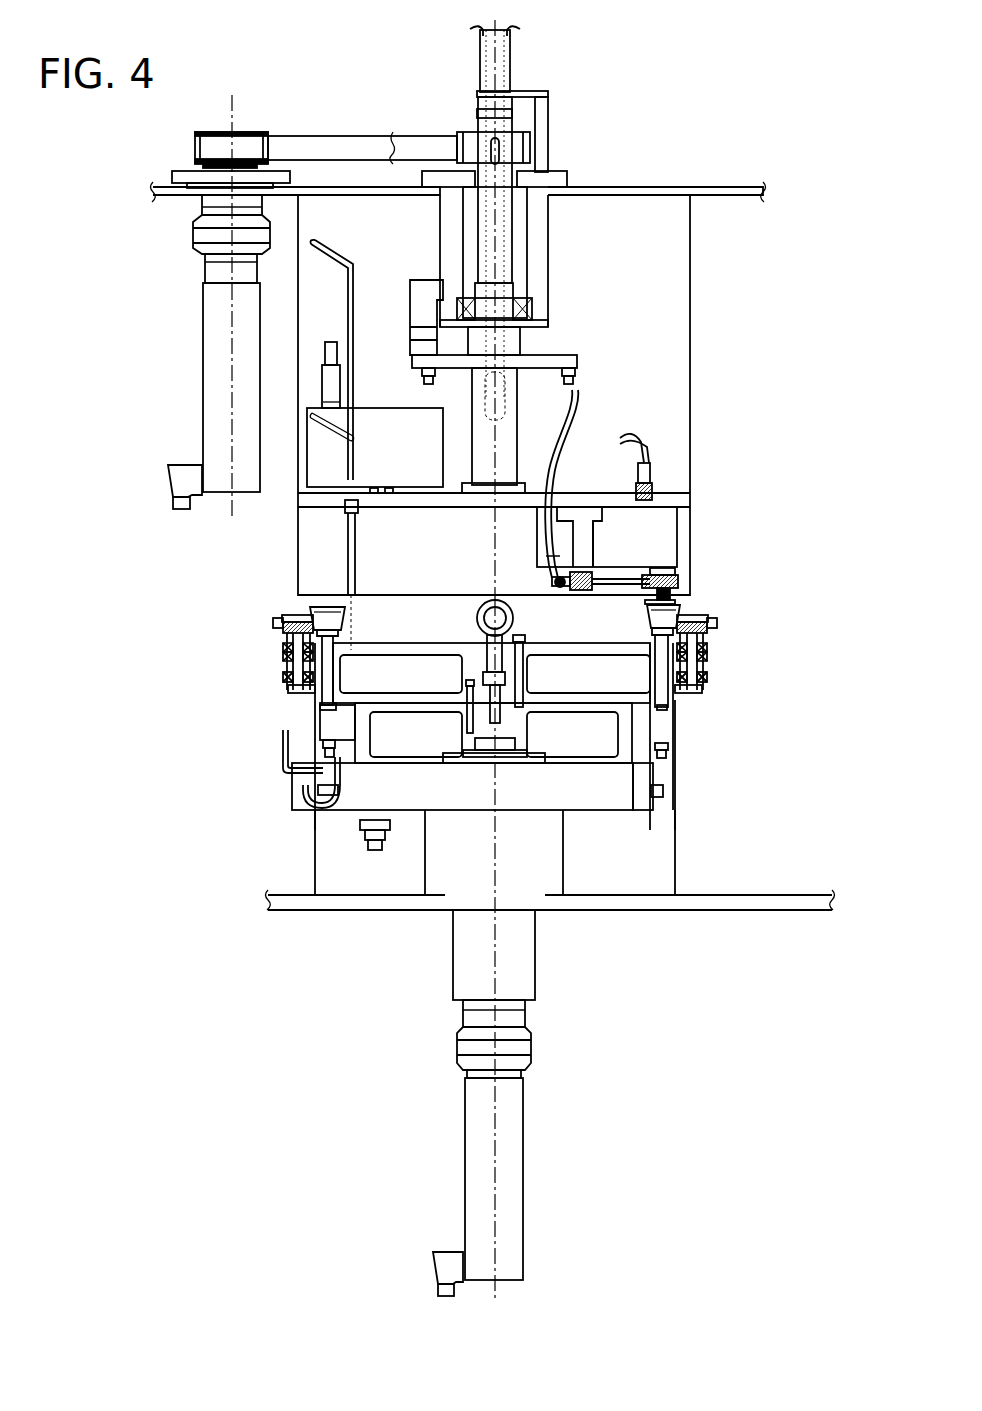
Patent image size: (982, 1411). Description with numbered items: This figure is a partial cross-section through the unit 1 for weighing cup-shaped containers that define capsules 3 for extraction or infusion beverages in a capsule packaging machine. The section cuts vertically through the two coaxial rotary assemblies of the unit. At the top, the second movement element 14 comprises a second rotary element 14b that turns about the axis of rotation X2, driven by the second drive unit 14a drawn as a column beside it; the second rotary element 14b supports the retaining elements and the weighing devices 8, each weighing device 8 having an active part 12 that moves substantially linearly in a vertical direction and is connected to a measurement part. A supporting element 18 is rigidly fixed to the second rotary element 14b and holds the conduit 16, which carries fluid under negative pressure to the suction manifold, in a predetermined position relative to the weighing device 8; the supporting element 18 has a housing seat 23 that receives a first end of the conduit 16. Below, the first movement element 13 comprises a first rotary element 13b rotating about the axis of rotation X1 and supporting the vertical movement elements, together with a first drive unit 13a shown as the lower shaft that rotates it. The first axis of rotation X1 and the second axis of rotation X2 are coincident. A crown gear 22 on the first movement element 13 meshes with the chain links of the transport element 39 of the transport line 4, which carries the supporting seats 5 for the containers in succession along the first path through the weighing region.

The unit for weighing containers 1 is at (742, 151).
The capsules 3 is at (303, 608).
The line for transporting containers 4 is at (496, 652).
The transport element 39 is at (276, 638).
The seats for supporting the containers 5 is at (349, 626).
The weighing devices 8 is at (607, 537).
The active part 12 is at (681, 572).
The first movement element 13 is at (620, 733).
The first drive unit 13a is at (463, 1145).
The first element rotating about axis X1 13b is at (716, 679).
The second movement element 14 is at (579, 182).
The second drive unit 14a is at (196, 343).
The second element rotating about axis X2 14b is at (573, 163).
The conduit 16 is at (629, 578).
The element for supporting the conduit 18 is at (598, 541).
The crown gear 22 is at (286, 692).
The housing seat 23 is at (578, 567).
The axis of rotation of the first rotary element X1 is at (497, 1172).
The axis of rotation of the second rotary element X2 is at (497, 52).